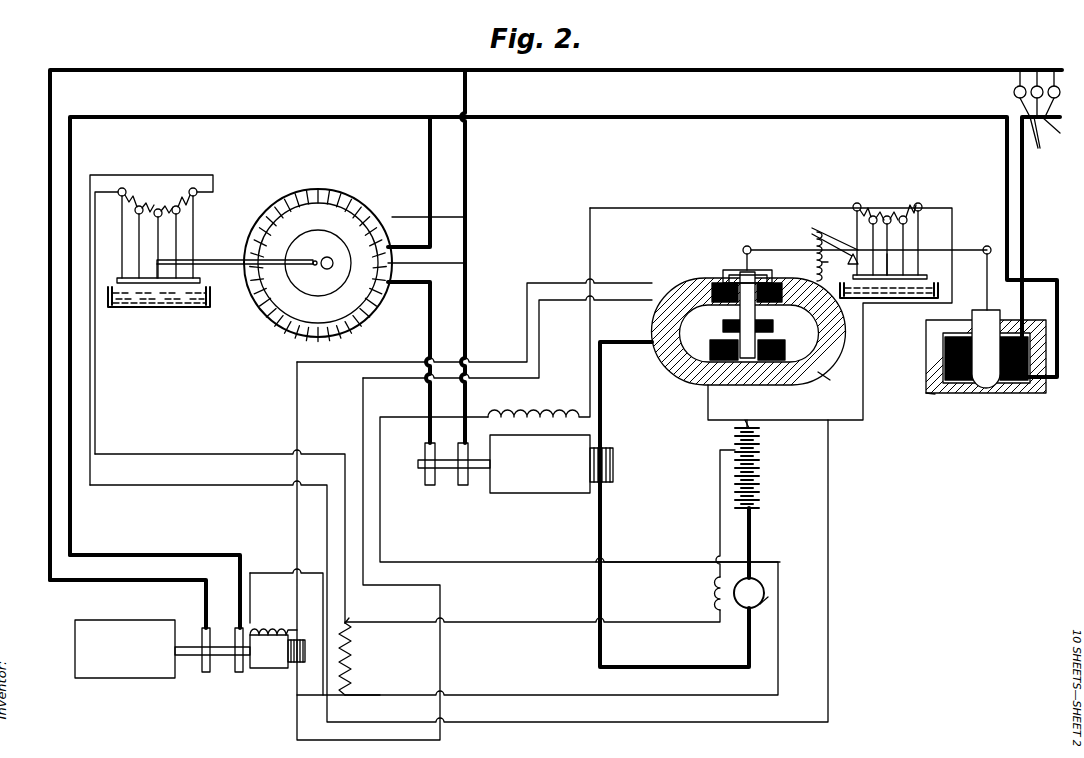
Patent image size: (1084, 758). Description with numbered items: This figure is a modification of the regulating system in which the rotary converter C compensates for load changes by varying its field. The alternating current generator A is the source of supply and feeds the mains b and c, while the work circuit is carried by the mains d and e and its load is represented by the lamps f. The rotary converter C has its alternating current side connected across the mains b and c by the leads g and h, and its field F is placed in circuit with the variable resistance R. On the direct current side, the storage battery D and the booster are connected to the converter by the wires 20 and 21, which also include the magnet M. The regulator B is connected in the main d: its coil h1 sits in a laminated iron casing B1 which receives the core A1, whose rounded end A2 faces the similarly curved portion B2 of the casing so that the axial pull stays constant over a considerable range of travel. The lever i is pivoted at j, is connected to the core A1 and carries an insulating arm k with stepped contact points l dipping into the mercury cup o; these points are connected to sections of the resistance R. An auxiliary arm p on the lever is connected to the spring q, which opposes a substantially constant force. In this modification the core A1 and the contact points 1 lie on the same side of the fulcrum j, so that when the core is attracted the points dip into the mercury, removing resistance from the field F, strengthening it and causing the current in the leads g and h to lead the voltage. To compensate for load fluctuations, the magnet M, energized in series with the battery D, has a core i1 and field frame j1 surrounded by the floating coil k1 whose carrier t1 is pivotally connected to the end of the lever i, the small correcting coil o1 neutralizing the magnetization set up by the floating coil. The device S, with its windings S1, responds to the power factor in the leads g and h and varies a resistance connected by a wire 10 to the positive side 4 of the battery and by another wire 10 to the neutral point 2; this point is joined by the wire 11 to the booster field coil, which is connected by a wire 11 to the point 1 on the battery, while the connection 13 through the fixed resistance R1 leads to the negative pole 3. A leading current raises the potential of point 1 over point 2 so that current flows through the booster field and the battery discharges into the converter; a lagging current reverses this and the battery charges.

The main c is at (50, 330).
The main b is at (70, 373).
The work-circuit main e is at (1035, 68).
The work-circuit main d is at (1055, 134).
The lamps f is at (1035, 143).
The variable resistance R is at (521, 329).
The wire 10 is at (100, 320).
The power factor regulator S is at (318, 256).
The wheel brush S1 is at (397, 243).
The negative pole of the battery 3 is at (408, 268).
The lead g is at (430, 316).
The lead h is at (466, 324).
The arm of insulation k is at (205, 288).
The contact points l is at (178, 295).
The mercury cup o is at (160, 300).
The wire 11 is at (523, 626).
The field of the rotary converter F is at (532, 403).
The rotary converter C is at (515, 464).
The alternating current generator A is at (190, 625).
The fixed resistance R1 is at (361, 659).
The neutral point 2 is at (349, 624).
The wire 13 is at (416, 695).
The wire 21 is at (598, 645).
The wire 20 is at (630, 342).
The storage battery D is at (763, 499).
The positive side of the battery 4 is at (745, 428).
The contact points / point on the battery 1 is at (718, 450).
The magnet M is at (674, 380).
The regulating means B is at (831, 381).
The floating coil k1 is at (715, 286).
The correcting coil o1 is at (723, 323).
The core i1 is at (750, 386).
The field frame j1 is at (795, 386).
The armature carrier t1 is at (736, 270).
The lever i is at (760, 250).
The spring q is at (815, 246).
The auxiliary arm p is at (828, 237).
The pivot j is at (838, 257).
The laminated iron casing B1 is at (1035, 394).
The curved portion of the casing B2 is at (1003, 394).
The rounded end of the core A2 is at (986, 382).
The core A1 is at (980, 316).
The magnet coil h1 is at (935, 395).